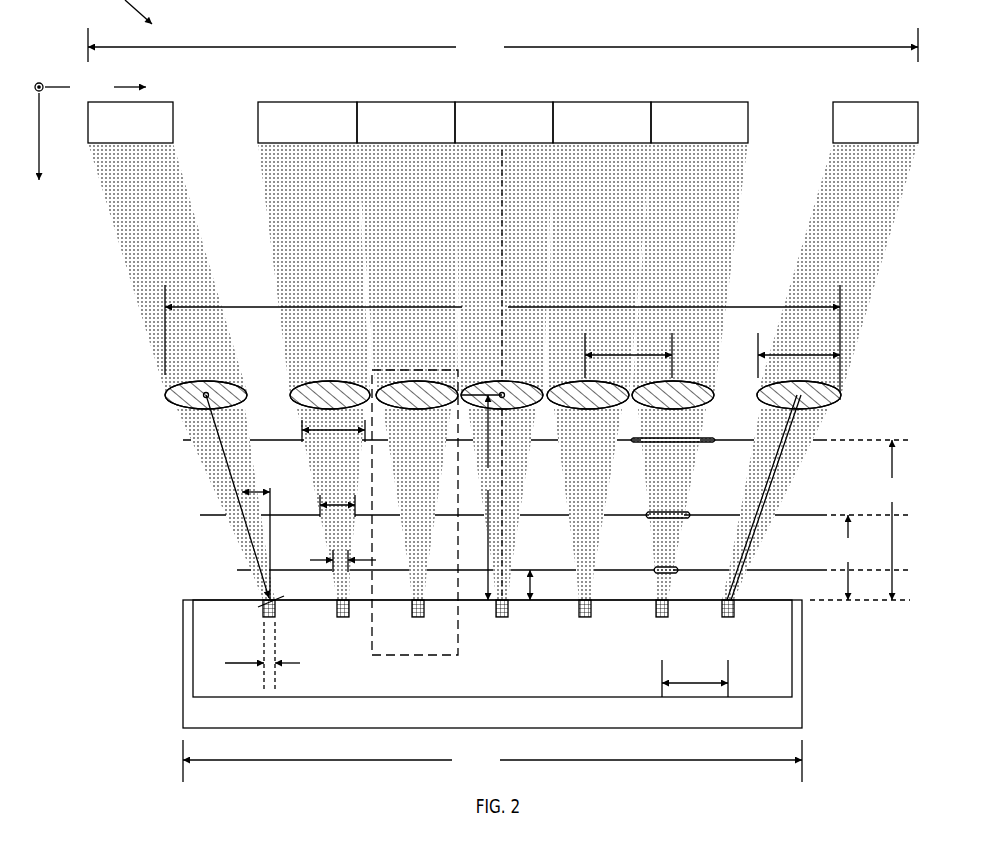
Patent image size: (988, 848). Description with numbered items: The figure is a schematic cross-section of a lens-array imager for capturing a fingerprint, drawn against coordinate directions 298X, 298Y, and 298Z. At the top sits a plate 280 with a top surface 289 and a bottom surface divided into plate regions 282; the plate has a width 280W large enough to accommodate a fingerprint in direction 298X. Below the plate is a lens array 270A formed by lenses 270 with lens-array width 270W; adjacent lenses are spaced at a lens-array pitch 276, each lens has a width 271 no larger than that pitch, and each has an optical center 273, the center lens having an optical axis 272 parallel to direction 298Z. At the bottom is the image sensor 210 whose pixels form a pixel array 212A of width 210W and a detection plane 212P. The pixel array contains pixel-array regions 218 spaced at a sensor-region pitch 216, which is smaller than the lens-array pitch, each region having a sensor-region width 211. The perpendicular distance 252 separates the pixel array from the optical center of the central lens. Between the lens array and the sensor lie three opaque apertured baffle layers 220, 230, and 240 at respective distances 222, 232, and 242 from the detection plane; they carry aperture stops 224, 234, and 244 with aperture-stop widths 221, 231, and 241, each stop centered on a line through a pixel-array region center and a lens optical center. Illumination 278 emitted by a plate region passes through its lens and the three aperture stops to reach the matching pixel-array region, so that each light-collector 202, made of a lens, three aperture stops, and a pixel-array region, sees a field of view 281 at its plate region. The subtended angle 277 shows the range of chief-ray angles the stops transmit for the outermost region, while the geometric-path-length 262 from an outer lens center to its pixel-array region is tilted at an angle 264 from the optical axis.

The light-collector 202 is at (398, 368).
The image sensor 210 is at (492, 664).
The width of pixel array 210W is at (492, 761).
The sensor-region width 211 is at (234, 656).
The pixel array 212A is at (492, 648).
The detection plane 212P is at (184, 604).
The sensor-region pitch 216 is at (700, 686).
The pixel-array region 218 is at (262, 620).
The apertured baffle-layer 220 is at (512, 561).
The aperture-stop width 221 is at (328, 556).
The distance 222 is at (532, 580).
The aperture stop 224 is at (666, 569).
The apertured baffle-layer 230 is at (494, 509).
The aperture-stop width 231 is at (360, 504).
The distance 232 is at (846, 557).
The aperture stop 234 is at (672, 512).
The apertured baffle-layer 240 is at (479, 432).
The aperture-stop width 241 is at (313, 428).
The distance 242 is at (888, 520).
The aperture stop 244 is at (674, 439).
The perpendicular distance 252 is at (485, 497).
The geometric-path-length 262 is at (230, 478).
The angle 264 is at (252, 492).
The lens 270 is at (126, 360).
The lens array 270A is at (124, 402).
The width of lens array 270W is at (502, 342).
The lens width 271 is at (800, 354).
The optical axis 272 is at (484, 266).
The optical center 273 is at (208, 392).
The lens-array pitch 276 is at (630, 352).
The subtended angle 277 is at (738, 597).
The illumination 278 is at (503, 371).
The plate 280 is at (84, 122).
The width of plate 280W is at (503, 45).
The field of view 281 is at (258, 82).
The plate region 282 is at (158, 124).
The top surface 289 is at (750, 99).
The direction 298X is at (90, 86).
The direction 298Y is at (35, 76).
The direction 298Z is at (42, 149).